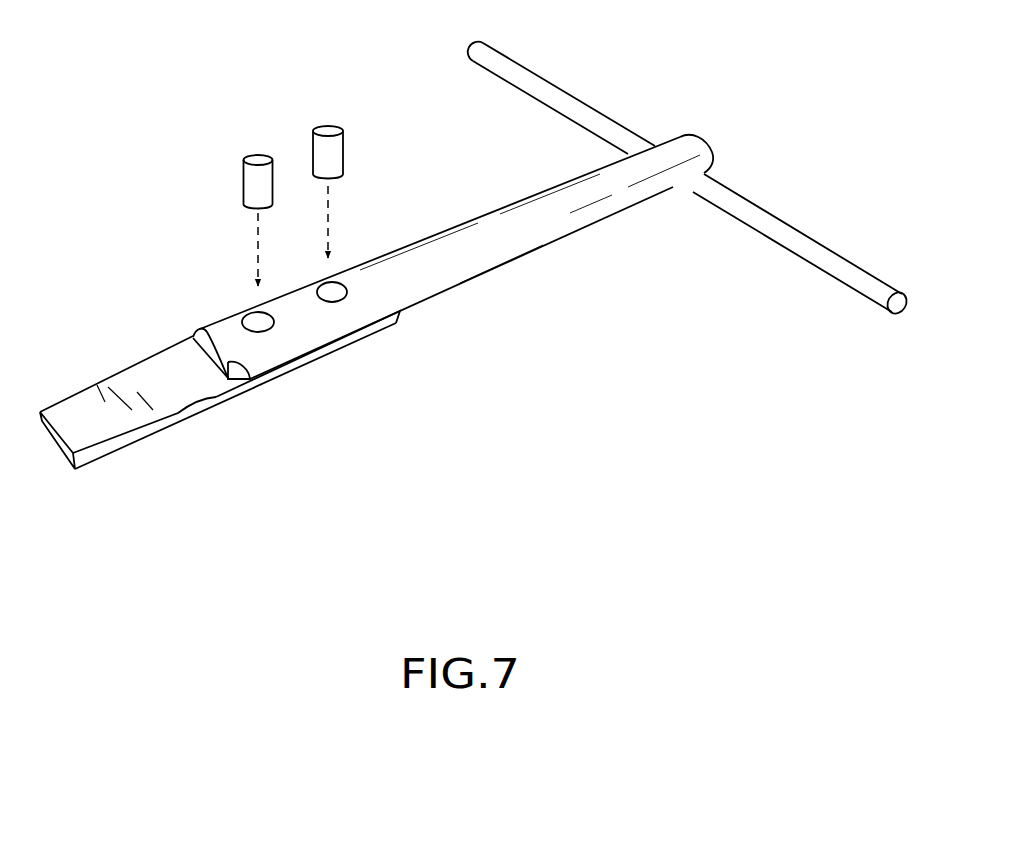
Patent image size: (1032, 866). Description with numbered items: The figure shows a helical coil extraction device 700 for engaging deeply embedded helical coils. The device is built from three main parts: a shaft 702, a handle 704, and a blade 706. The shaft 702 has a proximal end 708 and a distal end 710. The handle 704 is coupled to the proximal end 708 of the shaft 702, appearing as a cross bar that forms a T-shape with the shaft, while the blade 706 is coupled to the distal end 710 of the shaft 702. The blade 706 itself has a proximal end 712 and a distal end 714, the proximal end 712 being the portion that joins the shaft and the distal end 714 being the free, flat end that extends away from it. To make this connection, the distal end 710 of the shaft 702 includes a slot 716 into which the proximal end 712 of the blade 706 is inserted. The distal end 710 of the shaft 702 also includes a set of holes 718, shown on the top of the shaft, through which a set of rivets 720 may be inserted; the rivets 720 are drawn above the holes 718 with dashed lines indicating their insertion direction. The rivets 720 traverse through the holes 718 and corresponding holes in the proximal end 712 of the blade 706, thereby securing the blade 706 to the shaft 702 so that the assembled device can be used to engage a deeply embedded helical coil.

The helical coil extraction device 700 is at (284, 114).
The shaft 702 is at (422, 277).
The handle 704 is at (605, 125).
The blade 706 is at (173, 395).
The proximal end 708 is at (710, 134).
The distal end 710 is at (204, 304).
The proximal end 712 is at (387, 326).
The distal end 714 is at (87, 483).
The slot 716 is at (318, 347).
The set of holes 718 is at (252, 322).
The set of rivets 720 is at (250, 187).